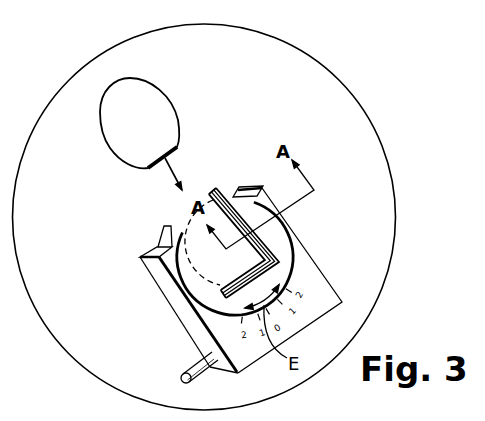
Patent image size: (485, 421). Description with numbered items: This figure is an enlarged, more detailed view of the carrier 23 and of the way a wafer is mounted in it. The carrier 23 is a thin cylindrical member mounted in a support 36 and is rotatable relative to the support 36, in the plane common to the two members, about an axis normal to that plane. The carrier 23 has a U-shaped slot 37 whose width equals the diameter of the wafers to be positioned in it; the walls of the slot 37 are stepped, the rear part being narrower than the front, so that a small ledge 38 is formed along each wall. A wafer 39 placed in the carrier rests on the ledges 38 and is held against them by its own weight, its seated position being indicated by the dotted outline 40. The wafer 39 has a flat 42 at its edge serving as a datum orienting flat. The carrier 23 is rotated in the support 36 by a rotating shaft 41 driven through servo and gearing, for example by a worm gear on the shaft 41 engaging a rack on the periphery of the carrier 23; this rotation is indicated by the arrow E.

The carrier 23 is at (247, 197).
The support 36 is at (309, 268).
The U-shaped slot 37 is at (216, 192).
The ledge 38 is at (250, 268).
The wafer 39 is at (160, 105).
The dotted outline 40 is at (175, 227).
The rotating shaft 41 is at (200, 360).
The flat 42 is at (155, 160).